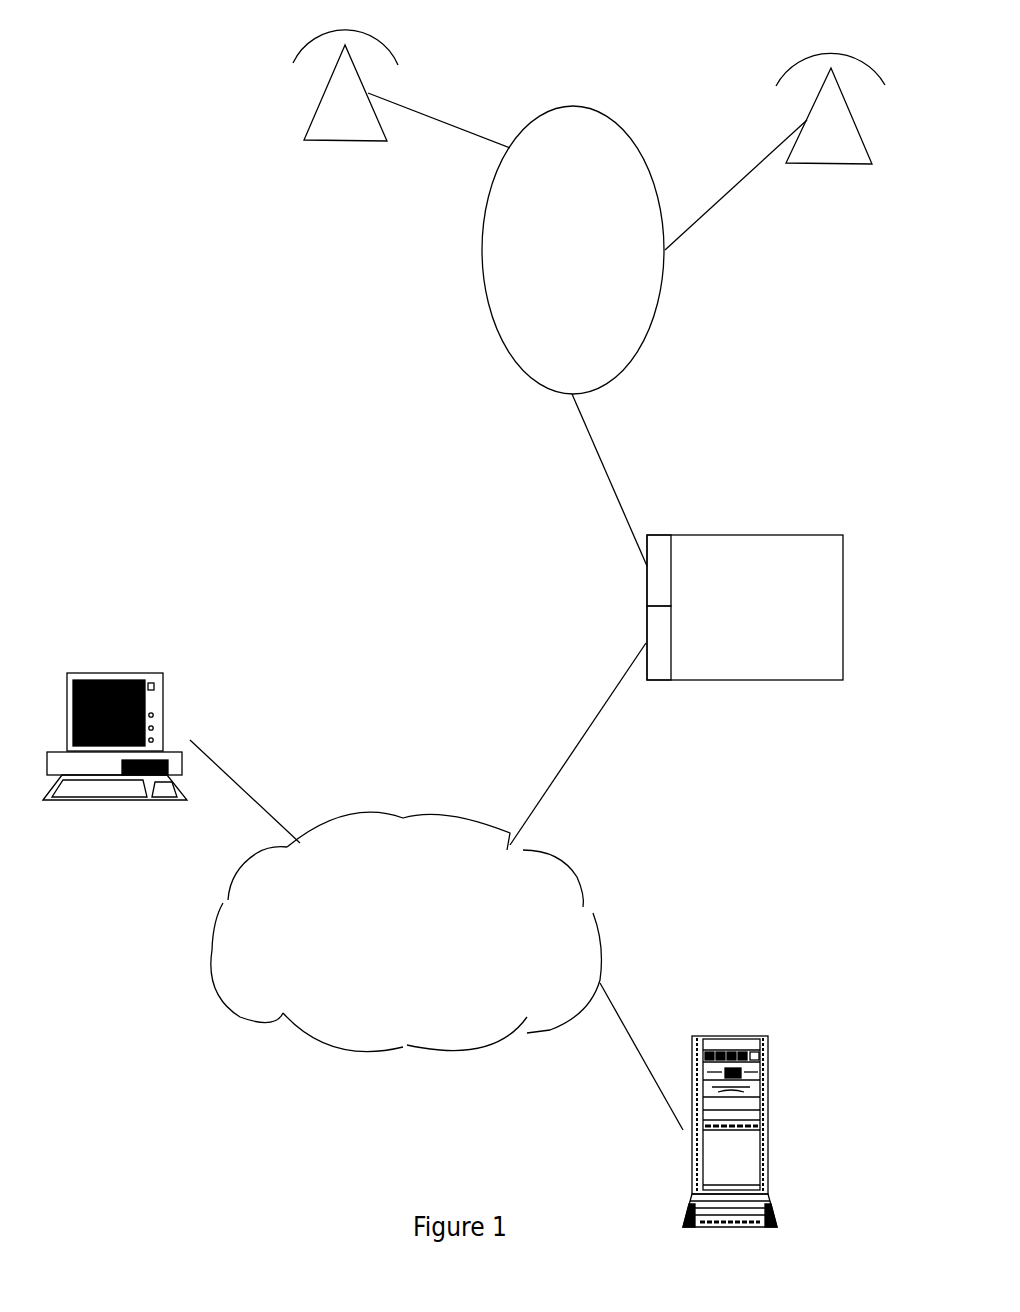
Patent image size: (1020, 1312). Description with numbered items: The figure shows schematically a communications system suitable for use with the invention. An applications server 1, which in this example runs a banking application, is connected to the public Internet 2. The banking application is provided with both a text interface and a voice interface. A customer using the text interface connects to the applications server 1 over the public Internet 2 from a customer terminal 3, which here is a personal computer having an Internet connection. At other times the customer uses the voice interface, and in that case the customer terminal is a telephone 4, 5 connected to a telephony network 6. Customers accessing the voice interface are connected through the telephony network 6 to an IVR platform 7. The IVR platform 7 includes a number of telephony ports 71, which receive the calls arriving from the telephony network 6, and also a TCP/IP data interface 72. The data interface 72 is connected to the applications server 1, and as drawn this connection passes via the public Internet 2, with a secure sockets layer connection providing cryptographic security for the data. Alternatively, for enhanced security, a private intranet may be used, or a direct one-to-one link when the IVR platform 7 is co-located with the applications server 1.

The applications server 1 is at (753, 1108).
The public Internet 2 is at (560, 925).
The customer terminal 3 is at (102, 787).
The telephone 4 is at (347, 92).
The telephone 5 is at (825, 140).
The telephony network 6 is at (618, 175).
The IVR platform 7 is at (763, 557).
The telephony ports 71 is at (662, 557).
The TCP/IP data interface 72 is at (657, 668).